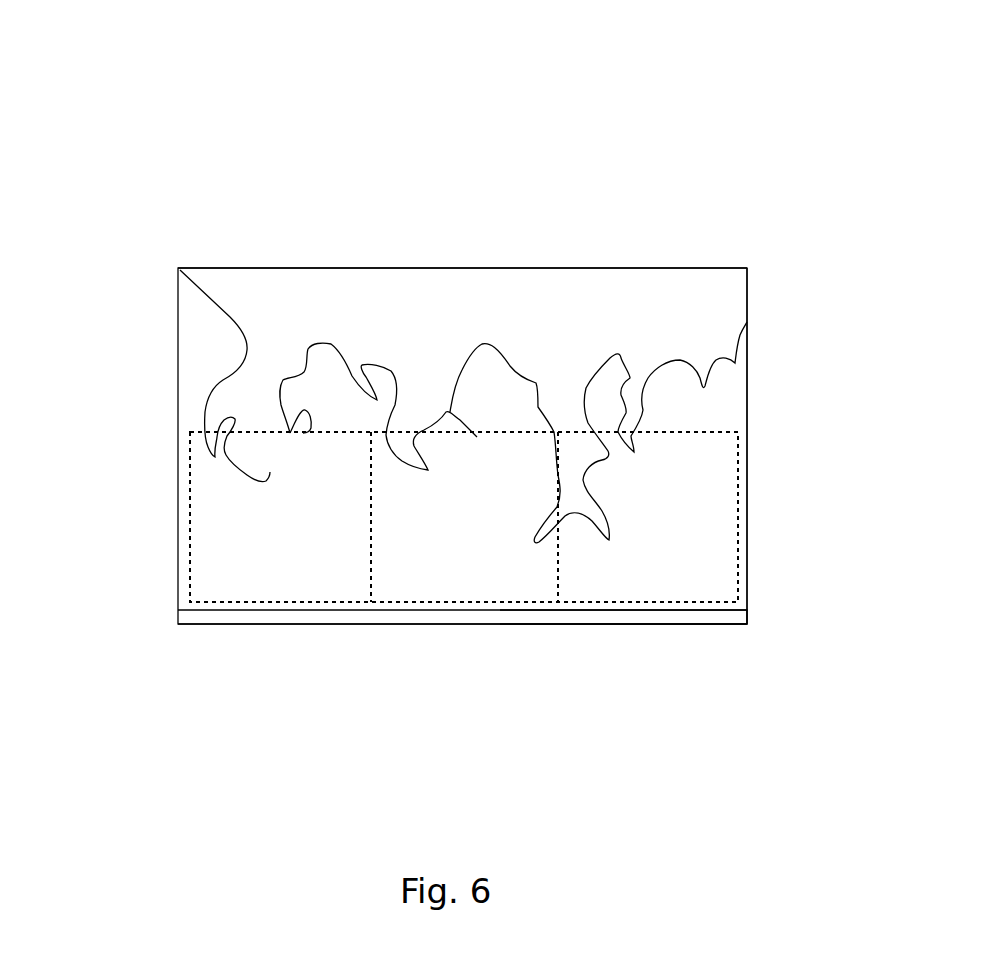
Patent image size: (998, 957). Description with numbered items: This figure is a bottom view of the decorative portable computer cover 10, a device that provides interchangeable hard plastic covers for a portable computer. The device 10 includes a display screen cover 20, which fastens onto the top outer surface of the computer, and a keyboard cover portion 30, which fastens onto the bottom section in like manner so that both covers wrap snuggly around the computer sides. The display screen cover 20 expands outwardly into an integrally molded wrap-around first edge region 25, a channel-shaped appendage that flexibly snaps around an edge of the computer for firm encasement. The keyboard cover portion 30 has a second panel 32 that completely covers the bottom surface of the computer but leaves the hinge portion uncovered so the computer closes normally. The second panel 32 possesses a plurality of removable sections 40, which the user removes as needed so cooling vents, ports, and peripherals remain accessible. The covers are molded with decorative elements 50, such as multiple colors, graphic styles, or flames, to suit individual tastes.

The portable computer cover 10 is at (890, 180).
The display screen cover 20 is at (613, 652).
The first edge region 25 is at (665, 620).
The keyboard cover portion 30 is at (780, 440).
The second panel 32 is at (227, 352).
The removable sections 40 is at (632, 566).
The decorative elements 50 is at (343, 360).